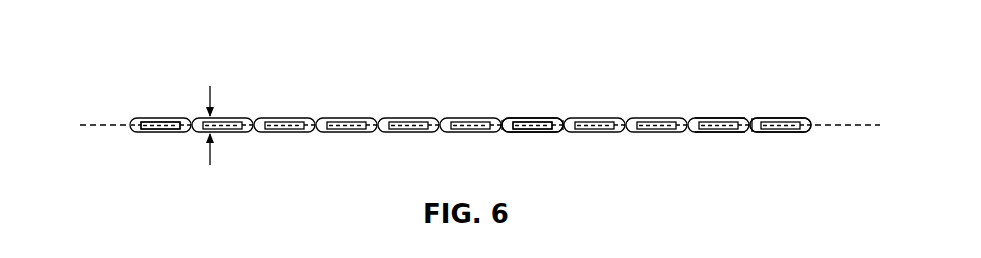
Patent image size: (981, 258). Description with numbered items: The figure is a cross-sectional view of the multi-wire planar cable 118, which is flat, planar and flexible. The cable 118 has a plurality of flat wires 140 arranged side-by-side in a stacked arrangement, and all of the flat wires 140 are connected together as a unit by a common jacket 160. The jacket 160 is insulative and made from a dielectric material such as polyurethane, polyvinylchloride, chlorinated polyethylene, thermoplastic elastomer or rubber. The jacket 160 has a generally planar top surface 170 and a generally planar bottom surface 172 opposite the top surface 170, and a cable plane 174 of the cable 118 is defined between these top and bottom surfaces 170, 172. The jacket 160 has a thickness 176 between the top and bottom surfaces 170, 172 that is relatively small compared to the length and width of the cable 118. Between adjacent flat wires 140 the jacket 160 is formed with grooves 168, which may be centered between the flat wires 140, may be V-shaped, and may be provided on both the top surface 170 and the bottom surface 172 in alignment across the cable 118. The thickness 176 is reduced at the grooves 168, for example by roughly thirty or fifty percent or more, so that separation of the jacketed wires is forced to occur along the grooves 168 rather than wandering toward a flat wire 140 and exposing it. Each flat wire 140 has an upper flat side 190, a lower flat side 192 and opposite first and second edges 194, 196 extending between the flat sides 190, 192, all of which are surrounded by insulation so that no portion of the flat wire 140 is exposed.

The multi-wire planar cable 118 is at (318, 78).
The flat wire 140 is at (160, 129).
The jacket 160 is at (798, 122).
The groove 168 is at (753, 116).
The top surface 170 is at (715, 118).
The bottom surface 172 is at (714, 132).
The cable plane 174 is at (112, 125).
The thickness 176 is at (210, 94).
The upper flat side 190 is at (545, 125).
The lower flat side 192 is at (534, 126).
The first edge 194 is at (563, 130).
The second edge 196 is at (507, 130).